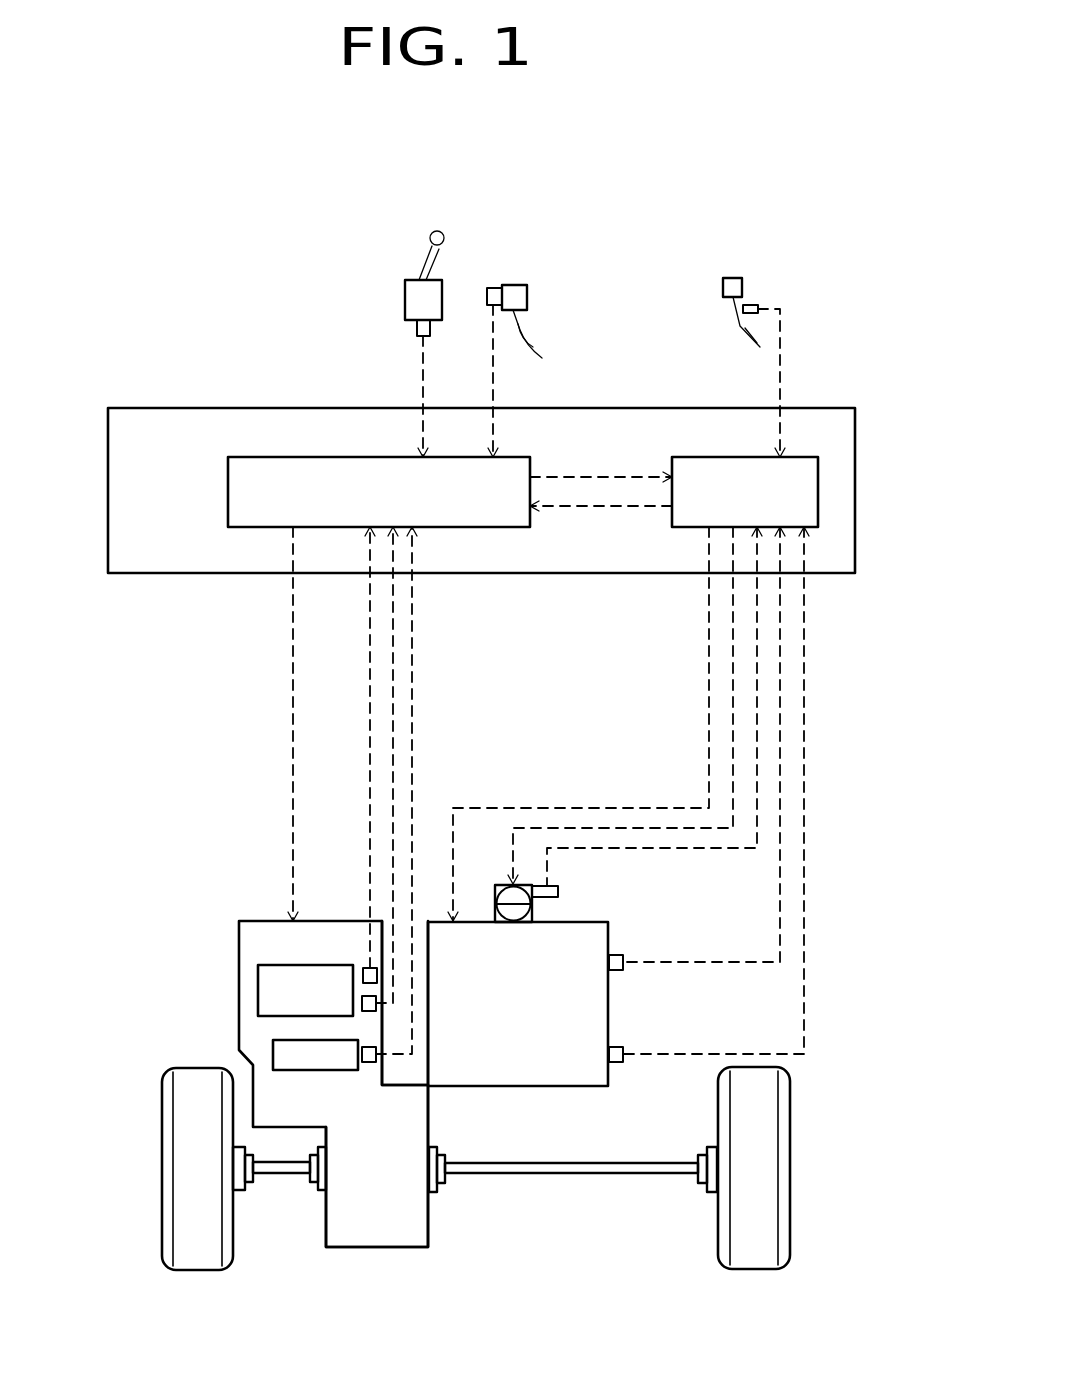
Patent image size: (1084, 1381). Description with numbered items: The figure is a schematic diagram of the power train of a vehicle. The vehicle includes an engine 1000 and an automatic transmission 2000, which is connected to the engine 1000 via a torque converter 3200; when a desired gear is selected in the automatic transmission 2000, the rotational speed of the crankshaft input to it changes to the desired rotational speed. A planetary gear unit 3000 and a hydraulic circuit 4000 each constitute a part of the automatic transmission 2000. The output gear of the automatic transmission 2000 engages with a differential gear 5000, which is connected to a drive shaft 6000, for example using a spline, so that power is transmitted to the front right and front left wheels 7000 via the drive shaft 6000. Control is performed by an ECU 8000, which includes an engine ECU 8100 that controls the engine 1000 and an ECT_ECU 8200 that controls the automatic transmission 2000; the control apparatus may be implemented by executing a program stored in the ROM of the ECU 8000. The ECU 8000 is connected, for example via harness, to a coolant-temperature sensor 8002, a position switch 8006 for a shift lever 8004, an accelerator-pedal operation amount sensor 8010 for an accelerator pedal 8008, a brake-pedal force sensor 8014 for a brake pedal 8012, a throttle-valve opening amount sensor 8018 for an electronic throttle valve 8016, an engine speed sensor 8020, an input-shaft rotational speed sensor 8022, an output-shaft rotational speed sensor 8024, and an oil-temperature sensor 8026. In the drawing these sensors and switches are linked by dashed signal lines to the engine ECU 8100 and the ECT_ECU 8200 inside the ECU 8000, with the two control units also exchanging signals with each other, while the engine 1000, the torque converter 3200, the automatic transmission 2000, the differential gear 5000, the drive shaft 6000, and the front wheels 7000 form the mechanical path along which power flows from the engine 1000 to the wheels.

The engine 1000 is at (565, 1086).
The automatic transmission 2000 is at (252, 921).
The planetary gear unit 3000 is at (258, 992).
The torque converter 3200 is at (385, 1086).
The hydraulic circuit 4000 is at (310, 1070).
The differential gear 5000 is at (375, 1247).
The drive shaft 6000 is at (280, 1175).
The front wheels 7000 is at (193, 1270).
The ECU 8000 is at (120, 408).
The coolant-temperature sensor 8002 is at (618, 1063).
The shift lever 8004 is at (420, 270).
The position switch 8006 is at (417, 330).
The accelerator pedal 8008 is at (738, 327).
The accelerator-pedal operation amount sensor 8010 is at (752, 303).
The brake pedal 8012 is at (518, 323).
The brake-pedal force sensor 8014 is at (497, 287).
The electronic throttle valve 8016 is at (532, 915).
The throttle-valve opening amount sensor 8018 is at (558, 892).
The engine speed sensor 8020 is at (616, 971).
The input-shaft rotational speed sensor 8022 is at (363, 975).
The output-shaft rotational speed sensor 8024 is at (369, 1012).
The oil-temperature sensor 8026 is at (367, 1063).
The engine ECU 8100 is at (805, 457).
The ECT_ECU 8200 is at (262, 457).